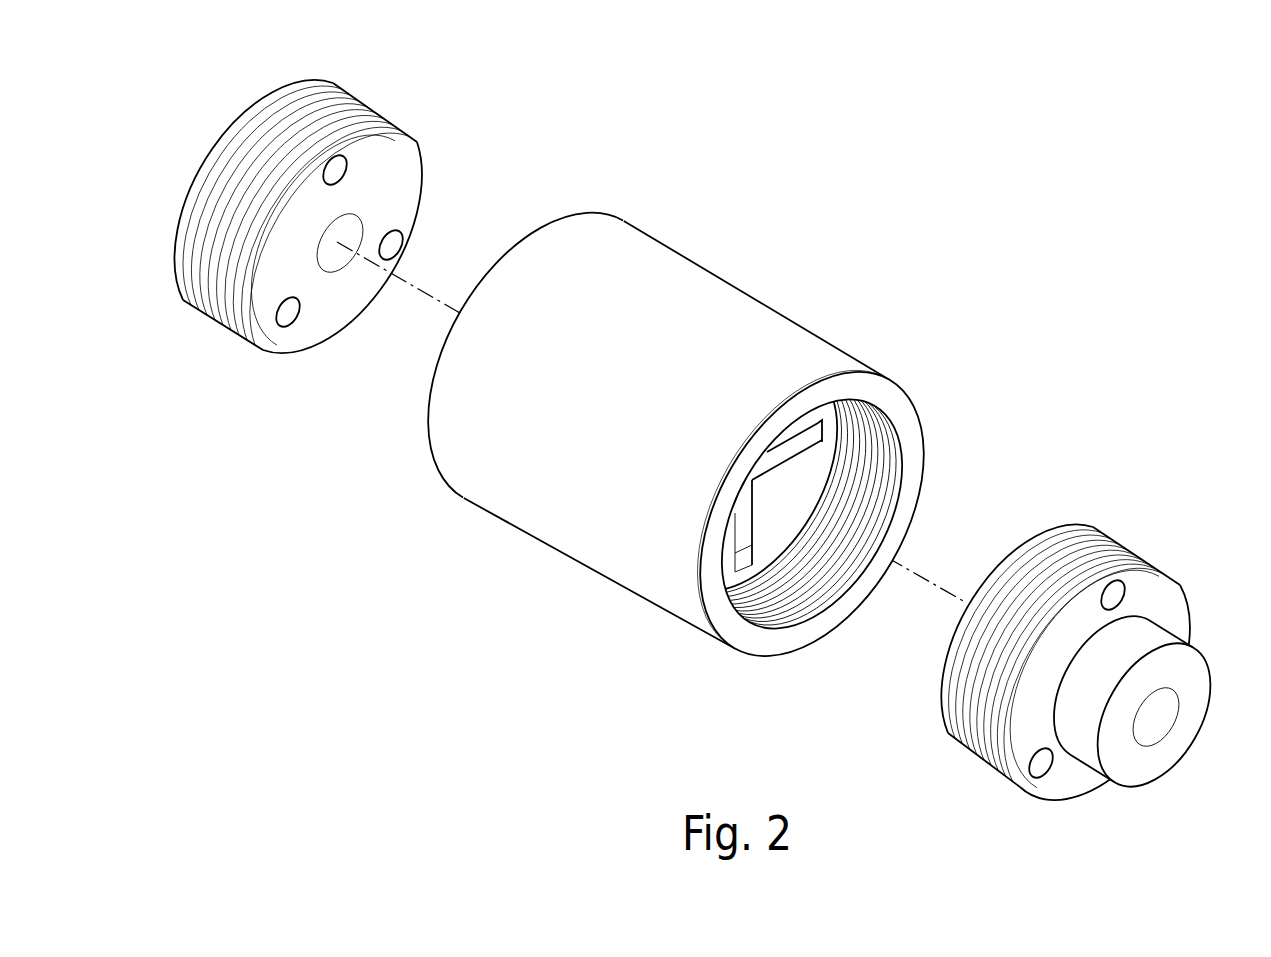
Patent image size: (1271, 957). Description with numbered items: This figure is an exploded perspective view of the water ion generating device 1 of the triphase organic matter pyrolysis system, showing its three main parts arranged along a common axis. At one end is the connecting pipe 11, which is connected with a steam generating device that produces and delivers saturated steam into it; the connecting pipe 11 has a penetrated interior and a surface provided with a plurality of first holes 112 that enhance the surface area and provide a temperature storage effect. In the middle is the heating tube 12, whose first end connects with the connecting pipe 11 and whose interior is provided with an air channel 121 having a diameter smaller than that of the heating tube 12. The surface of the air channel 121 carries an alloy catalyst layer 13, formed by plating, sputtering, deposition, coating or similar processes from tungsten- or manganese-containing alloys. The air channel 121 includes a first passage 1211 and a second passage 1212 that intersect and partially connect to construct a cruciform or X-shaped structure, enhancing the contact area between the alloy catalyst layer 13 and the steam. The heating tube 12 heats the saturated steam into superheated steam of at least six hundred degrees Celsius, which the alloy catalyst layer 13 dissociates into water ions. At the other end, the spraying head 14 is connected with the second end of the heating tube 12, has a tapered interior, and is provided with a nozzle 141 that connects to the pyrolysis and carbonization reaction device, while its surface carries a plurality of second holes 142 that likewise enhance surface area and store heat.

The water ion generating device 1 is at (1007, 188).
The connecting pipe 11 is at (408, 170).
The first holes 112 is at (342, 160).
The heating tube 12 is at (732, 322).
The air channel 121 is at (1032, 355).
The first passage 1211 is at (822, 425).
The second passage 1212 is at (745, 535).
The alloy catalyst layer 13 is at (820, 412).
The spraying head 14 is at (1093, 527).
The nozzle 141 is at (1187, 665).
The second holes 142 is at (1115, 592).